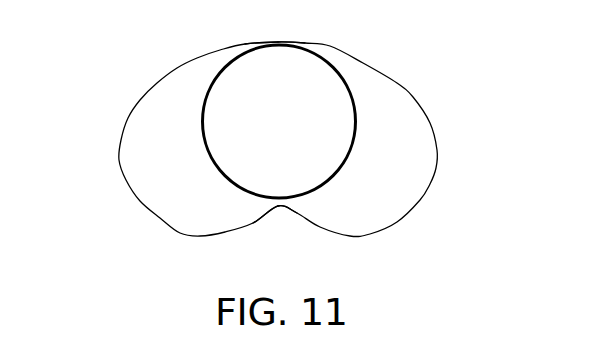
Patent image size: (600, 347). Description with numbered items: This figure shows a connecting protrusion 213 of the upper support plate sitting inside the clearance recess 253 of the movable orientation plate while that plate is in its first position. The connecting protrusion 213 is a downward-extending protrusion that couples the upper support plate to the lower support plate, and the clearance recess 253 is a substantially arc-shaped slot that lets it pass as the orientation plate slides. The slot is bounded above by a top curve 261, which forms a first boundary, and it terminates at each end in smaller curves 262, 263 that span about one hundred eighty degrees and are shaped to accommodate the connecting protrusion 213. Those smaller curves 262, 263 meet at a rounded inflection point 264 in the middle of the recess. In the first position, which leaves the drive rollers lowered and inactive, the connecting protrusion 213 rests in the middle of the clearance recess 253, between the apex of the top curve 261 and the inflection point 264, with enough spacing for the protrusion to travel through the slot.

The connecting protrusion 213 is at (305, 128).
The clearance recess 253 is at (272, 132).
The top curve 261 is at (309, 21).
The smaller curve 262 is at (432, 180).
The smaller curve 263 is at (124, 173).
The inflection point 264 is at (278, 208).